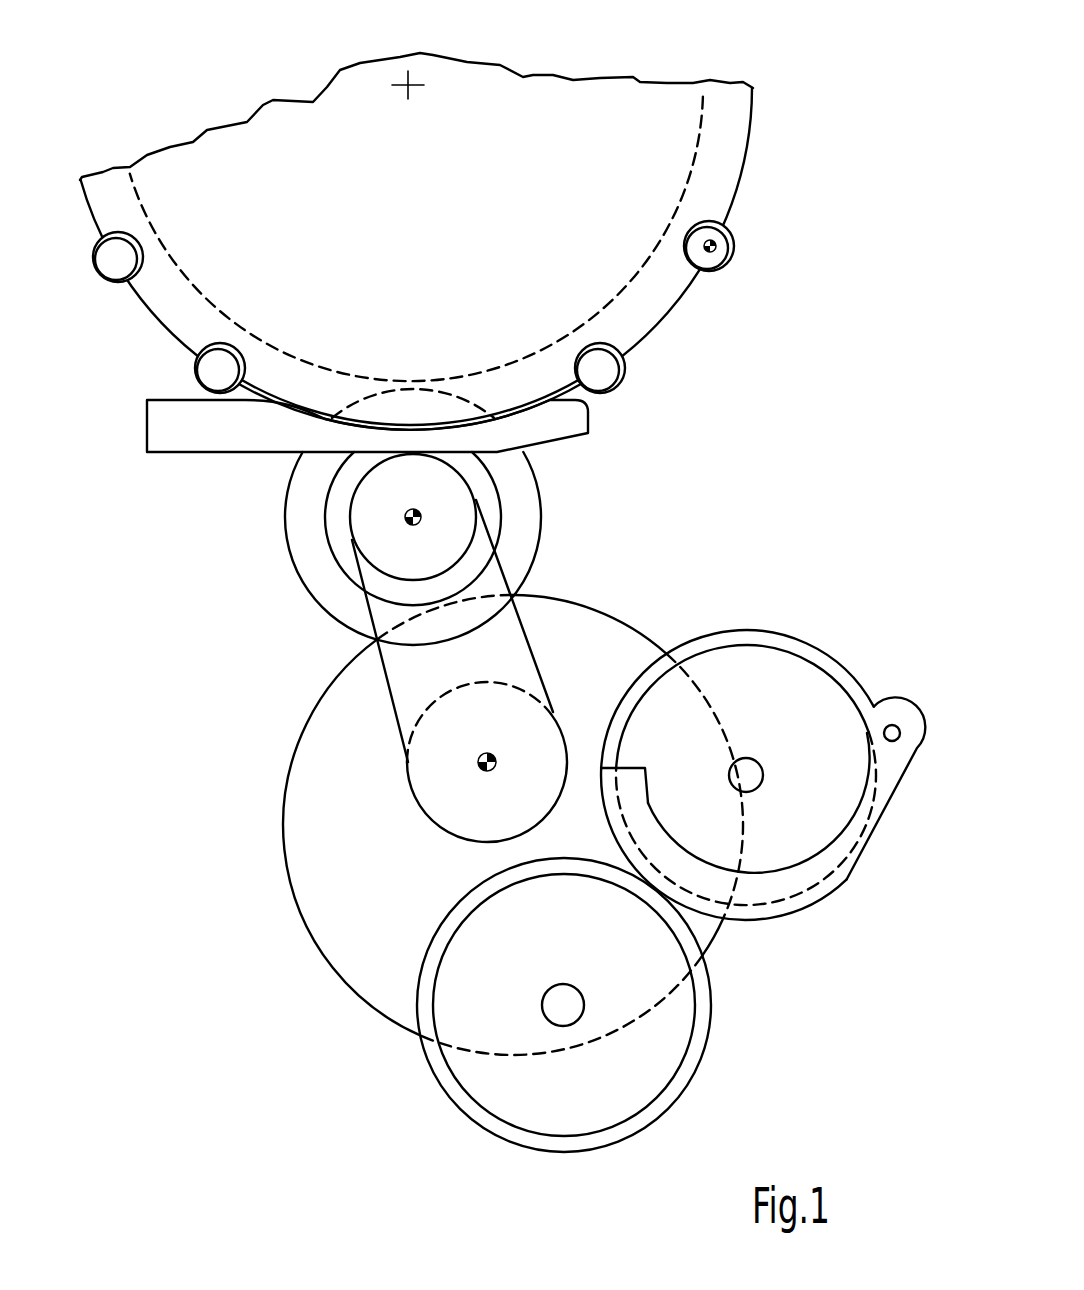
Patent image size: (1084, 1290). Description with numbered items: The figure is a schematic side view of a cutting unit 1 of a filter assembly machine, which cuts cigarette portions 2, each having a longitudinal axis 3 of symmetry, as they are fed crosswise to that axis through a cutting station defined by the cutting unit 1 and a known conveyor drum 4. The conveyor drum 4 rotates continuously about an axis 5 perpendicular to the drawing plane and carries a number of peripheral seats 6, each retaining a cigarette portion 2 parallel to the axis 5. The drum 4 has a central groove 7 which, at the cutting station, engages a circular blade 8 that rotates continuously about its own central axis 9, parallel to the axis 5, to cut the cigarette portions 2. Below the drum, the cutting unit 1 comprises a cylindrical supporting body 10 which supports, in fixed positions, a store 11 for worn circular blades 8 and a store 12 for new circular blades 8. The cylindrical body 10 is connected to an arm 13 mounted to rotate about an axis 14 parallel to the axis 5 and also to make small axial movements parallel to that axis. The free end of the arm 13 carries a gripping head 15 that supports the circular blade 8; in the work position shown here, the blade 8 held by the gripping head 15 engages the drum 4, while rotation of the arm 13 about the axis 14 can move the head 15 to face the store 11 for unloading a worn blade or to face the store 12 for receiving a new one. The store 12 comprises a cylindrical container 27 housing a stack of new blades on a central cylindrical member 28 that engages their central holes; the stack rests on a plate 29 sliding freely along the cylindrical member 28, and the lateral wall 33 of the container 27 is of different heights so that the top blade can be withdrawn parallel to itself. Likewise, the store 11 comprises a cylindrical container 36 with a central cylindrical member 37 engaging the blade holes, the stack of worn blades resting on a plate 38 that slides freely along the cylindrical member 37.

The cutting unit 1 is at (284, 1042).
The cigarette portion 2 is at (731, 254).
The longitudinal axis of symmetry 3 is at (717, 245).
The conveyor drum 4 is at (525, 97).
The axis 5 is at (411, 82).
The peripheral seats 6 is at (727, 280).
The central groove 7 is at (187, 279).
The circular blade 8 is at (537, 530).
The central axis 9 is at (411, 523).
The cylindrical supporting body 10 is at (318, 738).
The store for worn circular blades 11 is at (616, 1030).
The store for new circular blades 12 is at (849, 898).
The arm 13 is at (497, 633).
The axis 14 is at (482, 764).
The gripping head 15 is at (320, 506).
The cylindrical container 27 is at (768, 774).
The central cylindrical member 28 is at (761, 760).
The plate 29 is at (740, 660).
The lateral wall 33 is at (790, 642).
The cylindrical container 36 is at (460, 1131).
The central cylindrical member 37 is at (557, 1027).
The plate 38 is at (628, 1075).